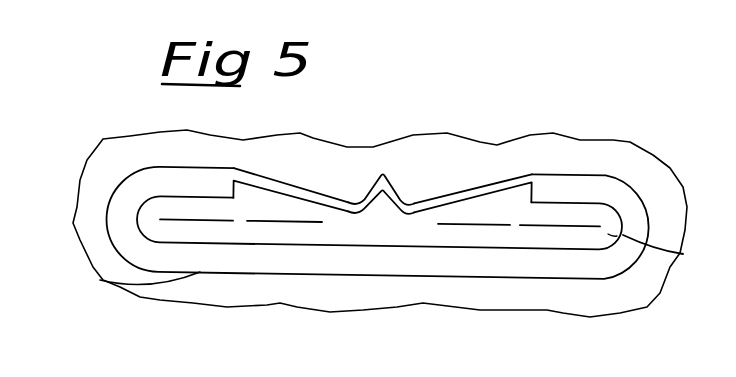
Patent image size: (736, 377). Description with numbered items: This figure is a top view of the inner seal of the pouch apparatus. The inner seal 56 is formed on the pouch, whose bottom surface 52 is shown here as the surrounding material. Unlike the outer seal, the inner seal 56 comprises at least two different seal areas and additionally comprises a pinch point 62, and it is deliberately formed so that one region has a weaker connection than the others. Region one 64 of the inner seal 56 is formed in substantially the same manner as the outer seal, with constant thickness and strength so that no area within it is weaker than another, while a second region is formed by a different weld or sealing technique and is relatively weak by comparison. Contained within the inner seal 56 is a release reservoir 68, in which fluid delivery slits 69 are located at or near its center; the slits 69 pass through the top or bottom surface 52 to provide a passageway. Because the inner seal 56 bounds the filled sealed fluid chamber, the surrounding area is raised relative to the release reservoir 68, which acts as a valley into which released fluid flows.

The bottom surface 52 is at (590, 147).
The inner seal 56 is at (160, 167).
The pinch point 62 is at (380, 171).
The region one 64 is at (535, 121).
The release reservoir 68 is at (683, 254).
The fluid delivery slits 69 is at (495, 228).